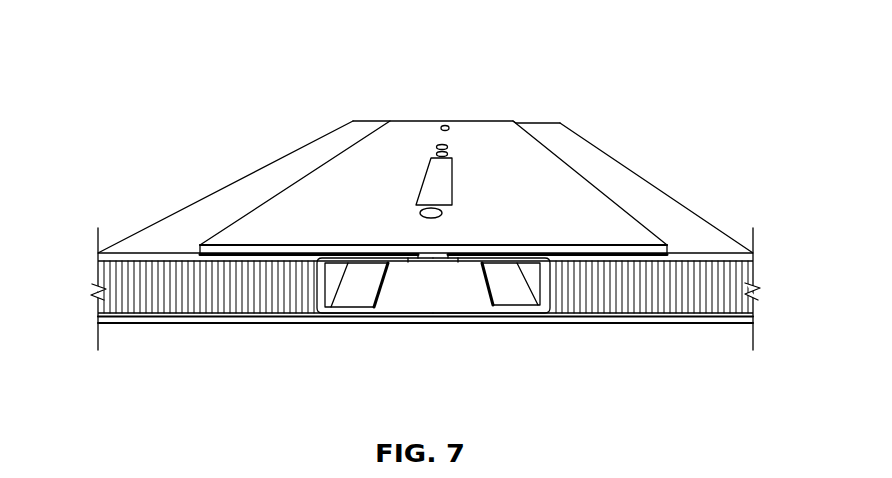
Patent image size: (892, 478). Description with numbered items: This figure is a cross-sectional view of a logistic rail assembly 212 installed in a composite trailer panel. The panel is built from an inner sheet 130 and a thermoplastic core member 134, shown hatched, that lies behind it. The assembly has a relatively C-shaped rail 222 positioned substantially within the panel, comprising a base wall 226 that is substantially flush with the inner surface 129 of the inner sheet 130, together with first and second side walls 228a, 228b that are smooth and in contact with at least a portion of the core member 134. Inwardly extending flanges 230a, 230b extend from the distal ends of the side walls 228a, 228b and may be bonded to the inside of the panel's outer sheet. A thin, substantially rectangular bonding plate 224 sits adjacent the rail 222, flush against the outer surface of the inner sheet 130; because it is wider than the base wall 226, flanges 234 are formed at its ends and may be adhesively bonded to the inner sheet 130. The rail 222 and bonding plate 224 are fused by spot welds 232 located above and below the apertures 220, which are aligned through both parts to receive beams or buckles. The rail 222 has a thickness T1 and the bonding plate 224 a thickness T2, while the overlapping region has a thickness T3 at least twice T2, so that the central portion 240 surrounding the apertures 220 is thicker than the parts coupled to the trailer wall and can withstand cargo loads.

The inner surface 129 is at (697, 235).
The inner sheet 130 is at (177, 218).
The core member 134 is at (705, 305).
The logistic rail assembly 212 is at (477, 111).
The apertures 220 is at (436, 185).
The rail 222 is at (435, 262).
The bonding plate 224 is at (320, 197).
The base wall 226 is at (408, 260).
The first side wall 228a is at (322, 288).
The second side wall 228b is at (545, 290).
The first inwardly extending flange 230a is at (345, 307).
The second inwardly extending flange 230b is at (515, 310).
The spot welds 232 is at (455, 141).
The flanges 234 is at (267, 227).
The central portion 240 is at (386, 196).
The thickness of rail T1 is at (508, 282).
The thickness of bonding plate T2 is at (237, 274).
The thickness of overlap portion T3 is at (465, 298).